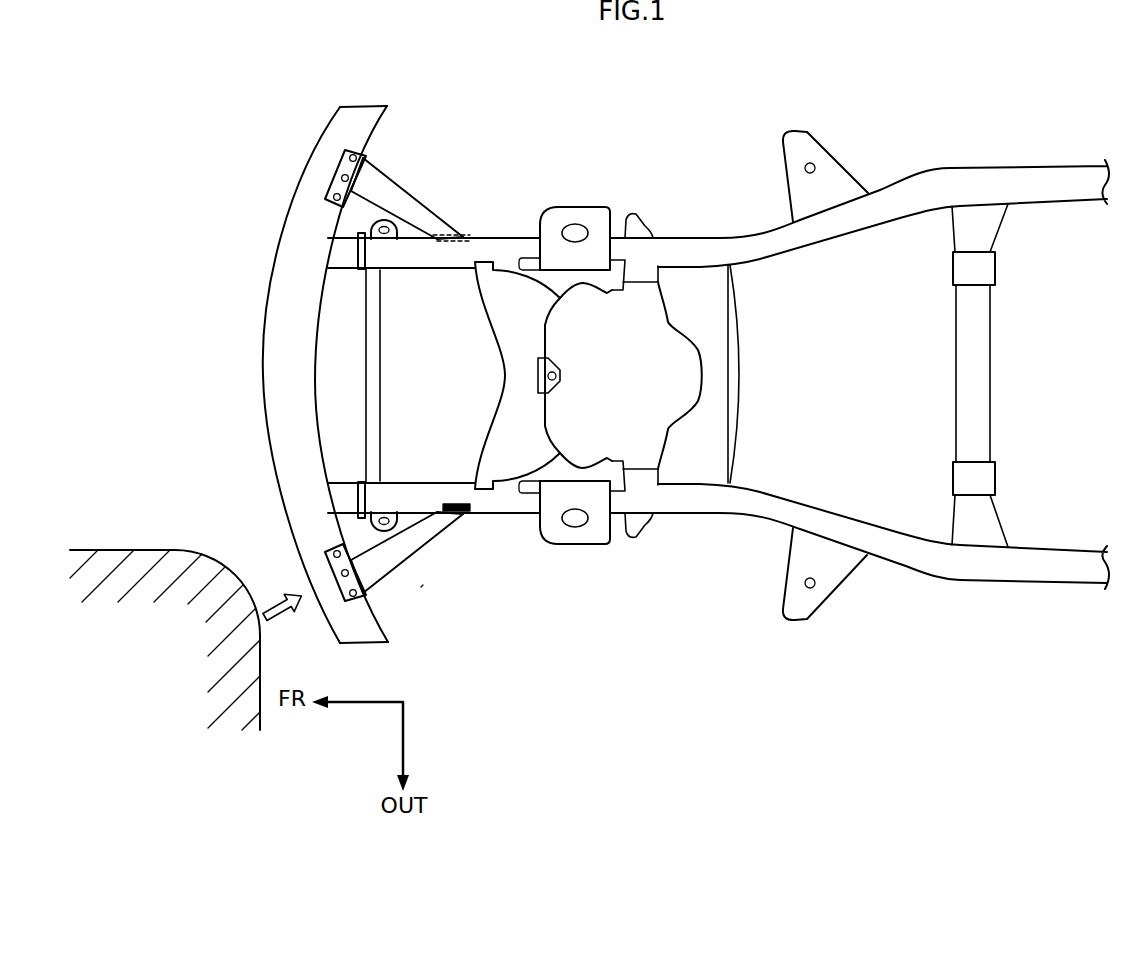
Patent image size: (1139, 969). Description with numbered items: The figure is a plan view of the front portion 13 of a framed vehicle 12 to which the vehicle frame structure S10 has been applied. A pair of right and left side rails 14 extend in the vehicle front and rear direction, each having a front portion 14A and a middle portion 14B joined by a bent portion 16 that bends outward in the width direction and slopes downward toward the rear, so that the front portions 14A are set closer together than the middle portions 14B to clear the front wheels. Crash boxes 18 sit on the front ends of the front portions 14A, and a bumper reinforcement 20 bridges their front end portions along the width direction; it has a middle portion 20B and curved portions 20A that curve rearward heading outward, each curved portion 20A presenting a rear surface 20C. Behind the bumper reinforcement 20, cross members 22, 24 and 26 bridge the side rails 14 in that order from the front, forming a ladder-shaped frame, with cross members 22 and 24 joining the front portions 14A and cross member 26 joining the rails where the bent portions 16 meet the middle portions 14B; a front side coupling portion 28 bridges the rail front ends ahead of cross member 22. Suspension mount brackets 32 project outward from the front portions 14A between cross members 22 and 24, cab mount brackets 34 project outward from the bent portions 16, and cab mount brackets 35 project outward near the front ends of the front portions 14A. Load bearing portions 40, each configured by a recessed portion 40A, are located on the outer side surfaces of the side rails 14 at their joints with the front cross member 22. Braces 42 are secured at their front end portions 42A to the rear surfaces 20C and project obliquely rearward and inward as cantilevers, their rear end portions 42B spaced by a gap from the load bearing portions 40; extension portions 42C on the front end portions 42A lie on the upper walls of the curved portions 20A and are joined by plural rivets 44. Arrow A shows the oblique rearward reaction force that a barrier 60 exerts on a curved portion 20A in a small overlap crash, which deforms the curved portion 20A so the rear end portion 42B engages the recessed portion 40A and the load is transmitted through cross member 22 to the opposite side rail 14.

The vehicle 12 is at (718, 356).
The front portion of the vehicle 13 is at (718, 356).
The side rail 14 is at (718, 375).
The front portion of the side rail 14A is at (420, 262).
The middle portion of the side rail 14B is at (1048, 176).
The bent portion 16 is at (785, 228).
The crash box 18 is at (350, 262).
The bumper reinforcement 20 is at (309, 388).
The curved portion 20A is at (318, 174).
The vehicle width direction middle portion 20B is at (272, 398).
The rear surface of the curved portion 20C is at (390, 612).
The cross member 22 is at (517, 380).
The cross member 24 is at (725, 374).
The cross member 26 is at (982, 374).
The front side coupling portion 28 is at (370, 362).
The suspension mount bracket 32 is at (588, 215).
The cab mount bracket 34 is at (818, 153).
The cab mount bracket 35 is at (386, 243).
The load bearing portion 40 is at (506, 399).
The recessed portion 40A is at (463, 234).
The brace 42 is at (425, 359).
The front end portion of the brace 42A is at (372, 165).
The rear end portion of the brace 42B is at (430, 215).
The extension portion 42C is at (330, 190).
The rivet 44 is at (341, 175).
The barrier 60 is at (197, 560).
The arrow A is at (277, 602).
The vehicle frame structure S10 is at (424, 586).